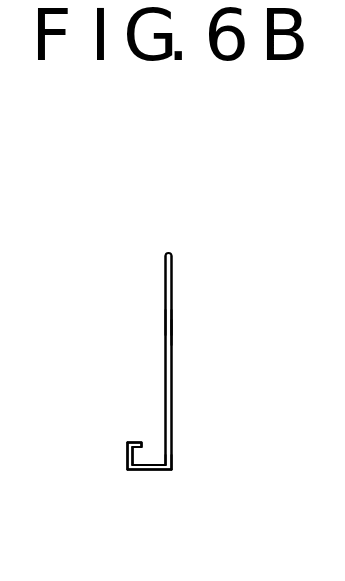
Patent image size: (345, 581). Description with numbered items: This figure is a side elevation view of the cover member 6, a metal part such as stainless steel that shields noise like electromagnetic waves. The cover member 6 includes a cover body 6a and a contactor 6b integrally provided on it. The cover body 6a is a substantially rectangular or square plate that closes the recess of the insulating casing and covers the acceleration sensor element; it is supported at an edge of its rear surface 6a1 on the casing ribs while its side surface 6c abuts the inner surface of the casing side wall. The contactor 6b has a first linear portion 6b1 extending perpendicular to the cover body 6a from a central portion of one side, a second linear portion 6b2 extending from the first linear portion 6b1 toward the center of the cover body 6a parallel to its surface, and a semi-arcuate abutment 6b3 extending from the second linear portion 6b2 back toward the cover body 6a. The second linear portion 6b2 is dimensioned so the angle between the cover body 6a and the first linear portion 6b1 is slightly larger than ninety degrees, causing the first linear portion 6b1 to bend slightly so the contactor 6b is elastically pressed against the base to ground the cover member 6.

The cover member 6 is at (180, 279).
The cover body 6a is at (181, 362).
The rear surface 6a1 is at (165, 322).
The side surface 6c is at (172, 333).
The contactor 6b is at (118, 480).
The first linear portion 6b1 is at (153, 470).
The second linear portion 6b2 is at (128, 455).
The abutment 6b3 is at (134, 442).